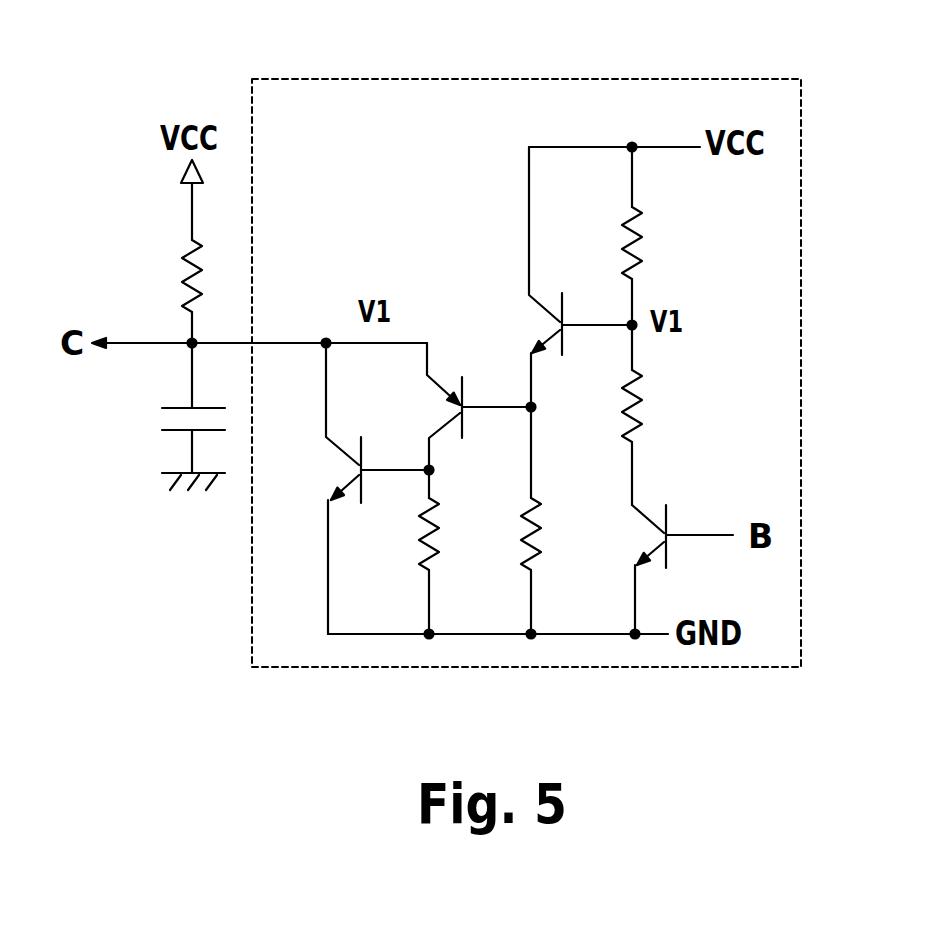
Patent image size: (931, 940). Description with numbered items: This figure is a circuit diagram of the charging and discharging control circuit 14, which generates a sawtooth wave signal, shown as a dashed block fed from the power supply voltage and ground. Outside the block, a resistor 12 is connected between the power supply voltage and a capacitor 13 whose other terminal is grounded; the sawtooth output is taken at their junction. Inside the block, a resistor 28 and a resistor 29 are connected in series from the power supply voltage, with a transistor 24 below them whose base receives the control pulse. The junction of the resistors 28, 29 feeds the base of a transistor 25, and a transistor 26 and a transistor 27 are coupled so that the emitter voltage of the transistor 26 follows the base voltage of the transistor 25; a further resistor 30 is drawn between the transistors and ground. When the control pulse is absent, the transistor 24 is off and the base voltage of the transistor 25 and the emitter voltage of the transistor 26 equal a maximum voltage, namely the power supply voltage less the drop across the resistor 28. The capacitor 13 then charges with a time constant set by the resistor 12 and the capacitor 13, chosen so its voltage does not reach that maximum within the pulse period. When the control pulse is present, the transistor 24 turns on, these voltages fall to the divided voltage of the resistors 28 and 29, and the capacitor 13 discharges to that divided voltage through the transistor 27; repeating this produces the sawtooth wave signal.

The resistor 12 is at (178, 284).
The capacitor 13 is at (158, 420).
The charging and discharging control circuit 14 is at (485, 80).
The transistor 24 is at (648, 542).
The transistor 25 is at (533, 318).
The transistor 26 is at (433, 407).
The transistor 27 is at (342, 473).
The resistor 28 is at (648, 243).
The resistor 29 is at (650, 415).
The resistor 30 is at (514, 548).